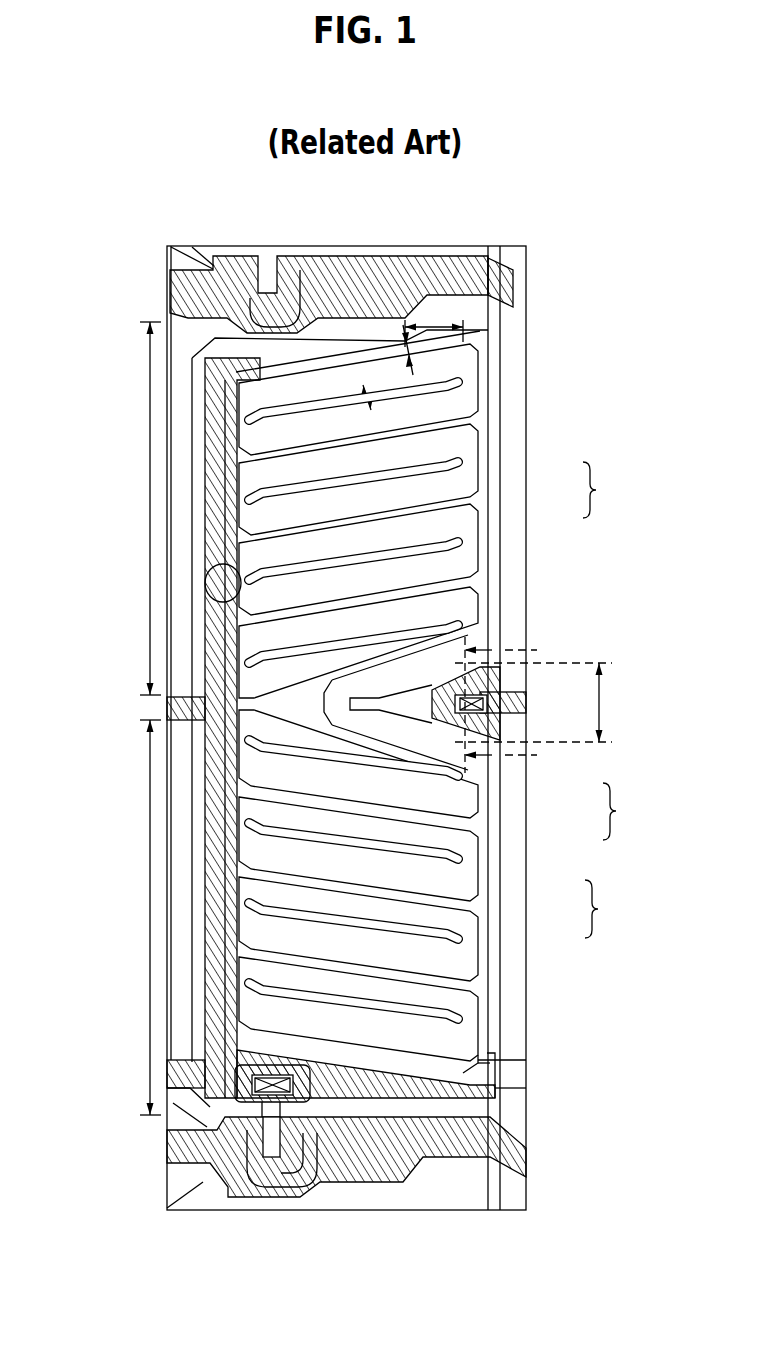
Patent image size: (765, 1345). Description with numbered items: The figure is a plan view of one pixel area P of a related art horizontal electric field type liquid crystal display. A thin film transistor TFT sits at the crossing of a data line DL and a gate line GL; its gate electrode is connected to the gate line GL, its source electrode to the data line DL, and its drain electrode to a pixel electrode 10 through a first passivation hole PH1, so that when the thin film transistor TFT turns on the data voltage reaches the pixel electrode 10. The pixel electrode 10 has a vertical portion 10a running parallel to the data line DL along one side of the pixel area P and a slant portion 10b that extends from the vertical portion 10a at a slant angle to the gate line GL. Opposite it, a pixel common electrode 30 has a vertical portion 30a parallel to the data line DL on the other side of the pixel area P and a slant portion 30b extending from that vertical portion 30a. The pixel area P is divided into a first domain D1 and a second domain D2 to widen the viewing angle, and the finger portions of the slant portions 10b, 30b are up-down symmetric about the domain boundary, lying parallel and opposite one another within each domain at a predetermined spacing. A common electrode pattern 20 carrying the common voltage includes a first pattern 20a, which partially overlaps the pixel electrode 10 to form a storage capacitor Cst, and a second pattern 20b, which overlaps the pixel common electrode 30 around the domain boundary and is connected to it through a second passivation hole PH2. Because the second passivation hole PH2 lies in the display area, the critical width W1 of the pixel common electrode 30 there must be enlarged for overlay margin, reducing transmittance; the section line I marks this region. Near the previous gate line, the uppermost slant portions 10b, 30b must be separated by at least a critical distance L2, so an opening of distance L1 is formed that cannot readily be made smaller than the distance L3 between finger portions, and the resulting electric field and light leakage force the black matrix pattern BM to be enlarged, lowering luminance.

The pixel area P is at (126, 262).
The first domain D1 is at (140, 508).
The second domain D2 is at (140, 917).
The storage capacitor Cst is at (205, 583).
The data line DL is at (180, 975).
The gate line GL is at (353, 1183).
The thin film transistor TFT is at (278, 1213).
The black matrix pattern BM is at (483, 392).
The predetermined distance L1 is at (434, 324).
The critical distance L2 is at (417, 350).
The distance between finger portions L3 is at (380, 397).
The pixel electrode 10 is at (603, 490).
The vertical portion 10a is at (240, 515).
The slant portion 10b is at (450, 468).
The common electrode pattern 20 is at (621, 811).
The first pattern 20a is at (240, 780).
The second pattern 20b is at (440, 720).
The pixel common electrode 30 is at (603, 909).
The vertical portion 30a is at (503, 893).
The slant portion 30b is at (405, 895).
The first passivation hole PH1 is at (260, 1097).
The second passivation hole PH2 is at (487, 703).
The critical width W1 is at (613, 702).
The section line I-I' I is at (562, 754).